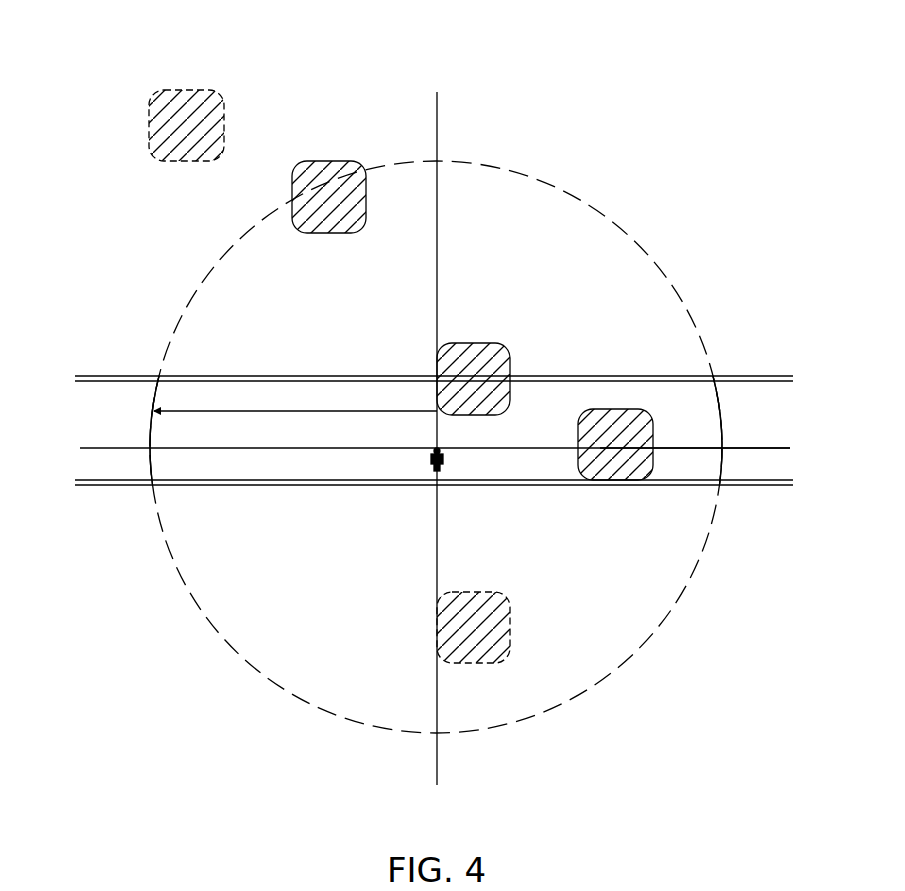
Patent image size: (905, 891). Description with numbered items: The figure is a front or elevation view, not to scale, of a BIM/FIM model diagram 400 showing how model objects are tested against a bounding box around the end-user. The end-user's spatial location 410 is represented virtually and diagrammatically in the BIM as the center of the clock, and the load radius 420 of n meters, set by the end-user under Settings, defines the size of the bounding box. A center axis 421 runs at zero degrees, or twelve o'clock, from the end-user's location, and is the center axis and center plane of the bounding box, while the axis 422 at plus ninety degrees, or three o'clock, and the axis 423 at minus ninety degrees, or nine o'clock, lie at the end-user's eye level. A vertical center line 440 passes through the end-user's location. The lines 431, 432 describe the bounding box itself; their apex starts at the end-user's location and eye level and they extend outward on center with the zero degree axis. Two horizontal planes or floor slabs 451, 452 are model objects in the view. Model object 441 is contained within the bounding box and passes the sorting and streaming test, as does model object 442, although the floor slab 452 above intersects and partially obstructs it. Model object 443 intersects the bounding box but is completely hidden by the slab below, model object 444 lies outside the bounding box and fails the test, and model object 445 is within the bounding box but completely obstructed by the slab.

The detection area diagram 400 is at (108, 63).
The end-user's spatial location 410 is at (428, 460).
The load radius 420 is at (153, 411).
The center axis at 0 degrees 421 is at (437, 161).
The center axis at +90 degrees 422 is at (787, 448).
The center axis at -90 degrees 423 is at (80, 448).
The bounding box boundary 431 is at (157, 376).
The bounding box boundary 432 is at (713, 376).
The center axis line 440 is at (433, 322).
The model object 441 is at (578, 462).
The model object 442 is at (505, 352).
The model object 443 is at (330, 233).
The model object 444 is at (186, 161).
The model object 445 is at (510, 628).
The floor slab 451 is at (75, 485).
The floor slab 452 is at (75, 376).